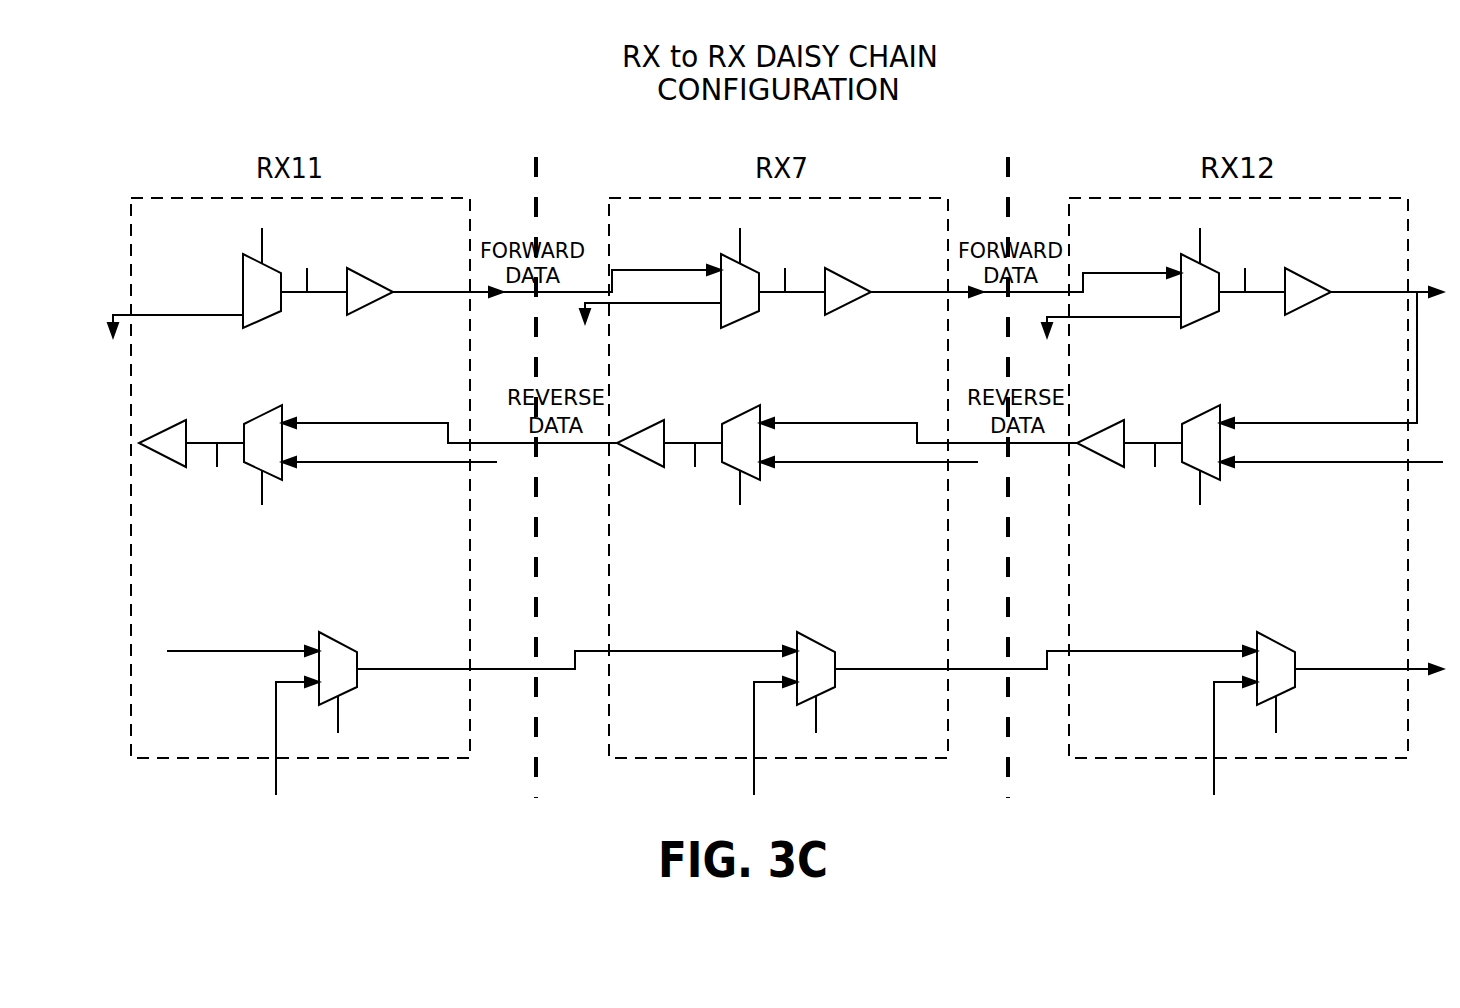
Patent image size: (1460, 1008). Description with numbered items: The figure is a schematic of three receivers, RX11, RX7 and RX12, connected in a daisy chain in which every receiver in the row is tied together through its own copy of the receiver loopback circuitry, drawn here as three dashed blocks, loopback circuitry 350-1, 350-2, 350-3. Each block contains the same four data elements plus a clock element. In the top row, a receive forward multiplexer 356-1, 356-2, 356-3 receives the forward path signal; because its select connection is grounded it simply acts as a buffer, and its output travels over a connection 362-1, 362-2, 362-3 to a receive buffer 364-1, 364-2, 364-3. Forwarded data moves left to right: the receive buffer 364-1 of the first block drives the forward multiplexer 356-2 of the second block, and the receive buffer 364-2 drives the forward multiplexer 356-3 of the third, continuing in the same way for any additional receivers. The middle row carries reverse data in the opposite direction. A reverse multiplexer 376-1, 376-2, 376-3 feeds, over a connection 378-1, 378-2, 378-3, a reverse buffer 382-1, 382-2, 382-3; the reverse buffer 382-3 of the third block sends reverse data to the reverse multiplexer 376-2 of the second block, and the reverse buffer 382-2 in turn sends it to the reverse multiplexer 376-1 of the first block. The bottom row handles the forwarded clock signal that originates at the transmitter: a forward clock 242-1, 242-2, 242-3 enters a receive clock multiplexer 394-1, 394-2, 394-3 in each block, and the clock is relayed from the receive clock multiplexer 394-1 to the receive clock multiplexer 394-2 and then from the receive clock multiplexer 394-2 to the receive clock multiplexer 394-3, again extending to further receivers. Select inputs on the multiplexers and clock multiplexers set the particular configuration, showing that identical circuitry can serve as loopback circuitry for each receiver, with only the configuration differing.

The loopback circuitry 350-1 is at (425, 627).
The loopback circuitry 350-2 is at (778, 478).
The loopback circuitry 350-3 is at (1238, 478).
The forward multiplexer 356-1 is at (260, 322).
The forward multiplexer 356-2 is at (753, 272).
The forward multiplexer 356-3 is at (1213, 272).
The connection 362-1 is at (311, 266).
The connection 362-2 is at (789, 266).
The connection 362-3 is at (1249, 266).
The receive buffer 364-1 is at (362, 277).
The receive buffer 364-2 is at (876, 277).
The receive buffer 364-3 is at (1336, 277).
The reverse multiplexer 376-1 is at (263, 414).
The reverse multiplexer 376-2 is at (744, 460).
The reverse multiplexer 376-3 is at (1204, 460).
The connection 378-1 is at (216, 474).
The connection 378-2 is at (694, 474).
The connection 378-3 is at (1154, 474).
The reverse buffer 382-1 is at (178, 463).
The reverse buffer 382-2 is at (619, 456).
The reverse buffer 382-3 is at (1079, 456).
The forward clock 242-1 is at (247, 653).
The forward clock 242-2 is at (708, 632).
The forward clock 242-3 is at (1168, 632).
The receive clock multiplexer 394-1 is at (353, 692).
The receive clock multiplexer 394-2 is at (838, 713).
The receive clock multiplexer 394-3 is at (1298, 713).